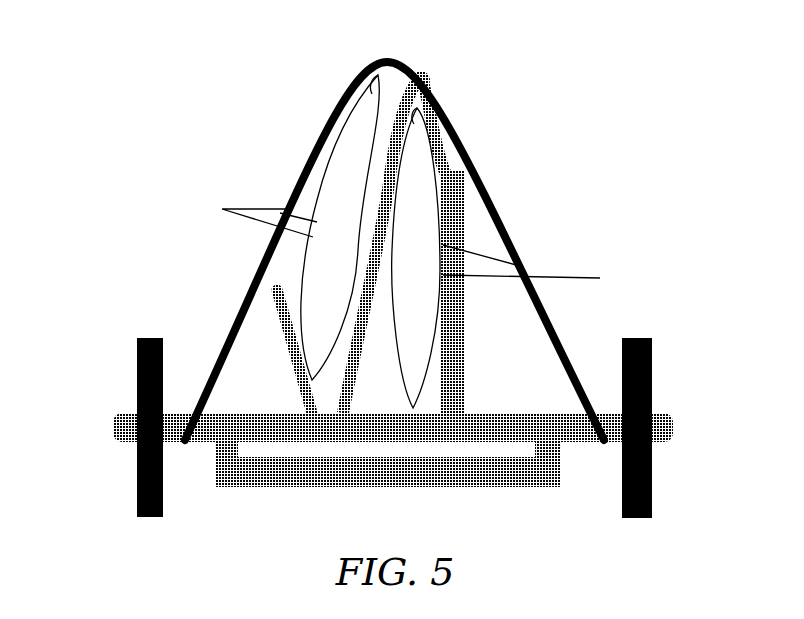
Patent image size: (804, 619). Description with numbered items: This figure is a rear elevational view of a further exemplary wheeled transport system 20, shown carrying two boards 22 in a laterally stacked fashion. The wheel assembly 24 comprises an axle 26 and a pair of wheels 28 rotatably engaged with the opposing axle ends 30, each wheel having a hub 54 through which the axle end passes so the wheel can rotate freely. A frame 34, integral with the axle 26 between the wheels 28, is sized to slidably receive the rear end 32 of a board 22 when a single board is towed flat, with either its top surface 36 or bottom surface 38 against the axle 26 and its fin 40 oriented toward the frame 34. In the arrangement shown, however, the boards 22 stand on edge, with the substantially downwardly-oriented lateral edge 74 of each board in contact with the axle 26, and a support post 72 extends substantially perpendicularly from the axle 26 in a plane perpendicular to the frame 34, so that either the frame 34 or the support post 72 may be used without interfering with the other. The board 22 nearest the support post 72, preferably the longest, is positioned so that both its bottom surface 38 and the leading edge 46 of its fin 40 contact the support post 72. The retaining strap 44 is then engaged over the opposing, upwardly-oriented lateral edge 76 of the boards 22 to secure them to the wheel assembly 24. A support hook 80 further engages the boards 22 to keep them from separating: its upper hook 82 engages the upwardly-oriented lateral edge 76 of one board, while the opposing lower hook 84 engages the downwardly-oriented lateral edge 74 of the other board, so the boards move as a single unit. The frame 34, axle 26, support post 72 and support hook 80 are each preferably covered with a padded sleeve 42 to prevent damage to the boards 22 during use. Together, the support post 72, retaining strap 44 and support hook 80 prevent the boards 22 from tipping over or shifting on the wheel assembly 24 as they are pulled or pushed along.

The wheeled transport system 20 is at (648, 134).
The board 22 is at (413, 158).
The wheel assembly 24 is at (112, 330).
The axle 26 is at (492, 430).
The wheels 28 is at (165, 500).
The axle ends 30 is at (172, 413).
The rear end of board 32 is at (330, 258).
The frame 34 is at (490, 477).
The top surface of board 36 is at (380, 83).
The bottom surface of board 38 is at (303, 278).
The fin 40 is at (247, 200).
The padded sleeve 42 is at (457, 315).
The retaining strap 44 is at (417, 238).
The leading edge of fin 46 is at (368, 268).
The hub 54 is at (118, 445).
The support post 72 is at (472, 296).
The downwardly-oriented lateral edge 74 is at (312, 382).
The upwardly-oriented lateral edge 76 is at (367, 93).
The support hook 80 is at (273, 343).
The upper hook 82 is at (430, 93).
The lower hook 84 is at (338, 402).